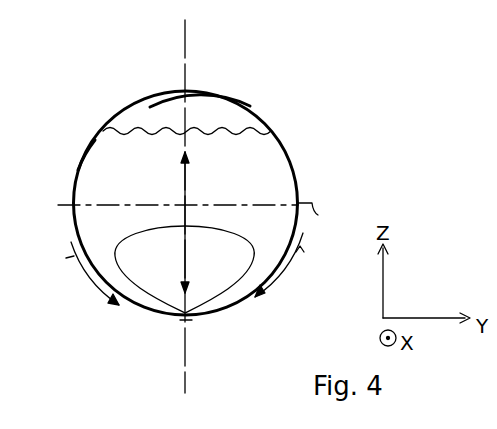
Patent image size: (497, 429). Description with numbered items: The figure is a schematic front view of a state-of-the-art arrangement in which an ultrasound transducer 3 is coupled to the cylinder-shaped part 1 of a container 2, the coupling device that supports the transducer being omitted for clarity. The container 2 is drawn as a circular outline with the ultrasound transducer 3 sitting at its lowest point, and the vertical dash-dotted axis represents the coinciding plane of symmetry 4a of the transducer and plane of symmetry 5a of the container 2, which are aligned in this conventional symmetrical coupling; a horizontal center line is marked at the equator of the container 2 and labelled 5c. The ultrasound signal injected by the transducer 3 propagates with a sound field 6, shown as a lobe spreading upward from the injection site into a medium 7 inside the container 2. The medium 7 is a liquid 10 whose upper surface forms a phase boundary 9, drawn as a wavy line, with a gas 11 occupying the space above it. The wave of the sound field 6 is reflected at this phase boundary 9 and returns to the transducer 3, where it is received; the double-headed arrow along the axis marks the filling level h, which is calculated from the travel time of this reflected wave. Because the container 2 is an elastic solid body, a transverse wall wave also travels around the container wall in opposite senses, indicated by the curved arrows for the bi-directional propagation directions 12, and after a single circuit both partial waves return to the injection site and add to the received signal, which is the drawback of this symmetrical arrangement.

The cylinder-shaped part 1 is at (241, 203).
The container 2 is at (288, 145).
The ultrasound transducer 3 is at (186, 322).
The plane of symmetry 4a is at (230, 203).
The plane of symmetry 5a is at (186, 27).
The equatorial plane 5c is at (204, 221).
The sound field 6 is at (249, 233).
The medium 7 is at (56, 158).
The phase boundary 9 is at (158, 117).
The liquid 10 is at (97, 172).
The gas 11 is at (213, 107).
The bi-directional propagation directions 12 is at (89, 288).
The filling level h is at (187, 180).